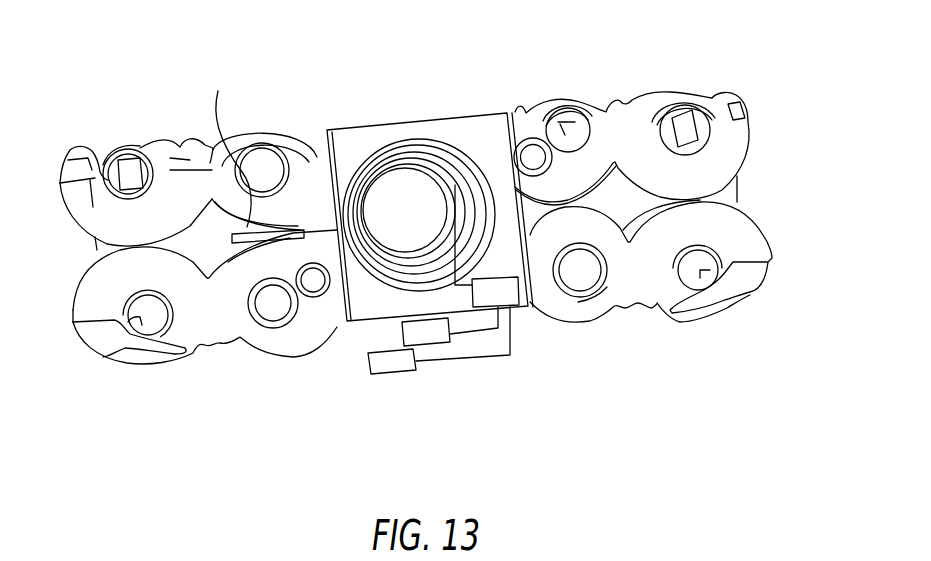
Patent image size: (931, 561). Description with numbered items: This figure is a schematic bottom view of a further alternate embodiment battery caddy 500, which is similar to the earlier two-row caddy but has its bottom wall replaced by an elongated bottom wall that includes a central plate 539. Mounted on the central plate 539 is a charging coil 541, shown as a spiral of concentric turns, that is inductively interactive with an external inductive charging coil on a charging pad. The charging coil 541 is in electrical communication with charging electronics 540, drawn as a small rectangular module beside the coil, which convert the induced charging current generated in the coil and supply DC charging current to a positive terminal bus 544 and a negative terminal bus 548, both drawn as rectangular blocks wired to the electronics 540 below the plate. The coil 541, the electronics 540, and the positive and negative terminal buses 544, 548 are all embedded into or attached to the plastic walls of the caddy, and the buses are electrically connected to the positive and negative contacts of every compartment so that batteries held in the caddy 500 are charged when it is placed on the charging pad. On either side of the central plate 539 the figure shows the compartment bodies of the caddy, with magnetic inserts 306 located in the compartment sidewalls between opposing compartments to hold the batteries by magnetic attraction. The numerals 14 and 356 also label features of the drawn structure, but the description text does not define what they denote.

The link of band 14 is at (60, 193).
The magnetic insert 306 is at (248, 132).
The lug 356 is at (83, 160).
The battery caddy 500 is at (560, 90).
The central plate 539 is at (438, 119).
The charging electronics 540 is at (506, 290).
The charging coil 541 is at (407, 140).
The positive terminal bus 544 is at (428, 338).
The negative terminal bus 548 is at (390, 366).